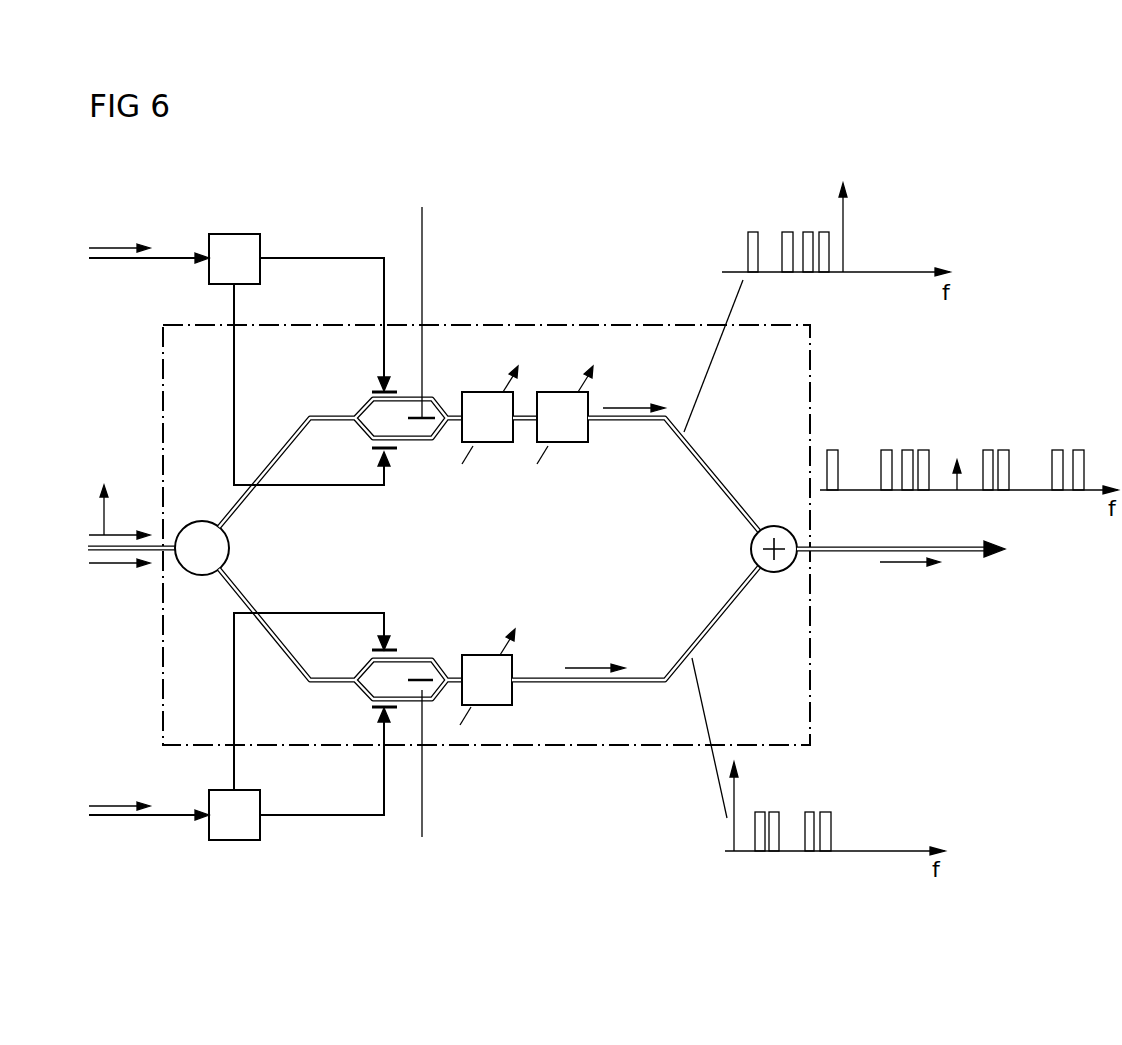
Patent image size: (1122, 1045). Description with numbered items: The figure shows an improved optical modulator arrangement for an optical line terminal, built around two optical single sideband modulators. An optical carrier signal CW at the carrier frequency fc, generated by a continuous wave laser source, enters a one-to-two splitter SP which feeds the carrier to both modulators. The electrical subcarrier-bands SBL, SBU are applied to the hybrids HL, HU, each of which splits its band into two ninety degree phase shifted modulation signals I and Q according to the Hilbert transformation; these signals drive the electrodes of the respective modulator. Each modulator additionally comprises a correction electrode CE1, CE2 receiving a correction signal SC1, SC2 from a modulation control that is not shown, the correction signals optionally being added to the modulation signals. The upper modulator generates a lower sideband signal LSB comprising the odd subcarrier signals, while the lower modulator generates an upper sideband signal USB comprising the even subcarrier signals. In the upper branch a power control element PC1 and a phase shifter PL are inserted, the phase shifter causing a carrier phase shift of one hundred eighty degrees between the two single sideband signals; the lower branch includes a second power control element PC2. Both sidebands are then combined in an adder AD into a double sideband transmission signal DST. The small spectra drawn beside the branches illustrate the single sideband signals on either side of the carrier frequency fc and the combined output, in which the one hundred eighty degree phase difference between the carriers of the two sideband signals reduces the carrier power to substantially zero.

The optical carrier signal CW is at (131, 564).
The carrier frequency fc is at (530, 588).
The splitter SP is at (229, 548).
The correction electrode CE1 is at (424, 440).
The correction electrode CE2 is at (423, 660).
The correction signal SC1 is at (434, 232).
The correction signal SC2 is at (434, 796).
The hybrid HL is at (233, 233).
The hybrid HU is at (234, 843).
The electrical subcarrier-band SBL is at (149, 242).
The electrical subcarrier-band SBU is at (149, 799).
The power control element PC1 is at (486, 390).
The second power control element PC2 is at (513, 699).
The phase shifter PL is at (561, 390).
The lower sideband signal LSB is at (740, 454).
The upper sideband signal USB is at (788, 548).
The adder AD is at (751, 549).
The double sideband transmission signal DST is at (901, 569).